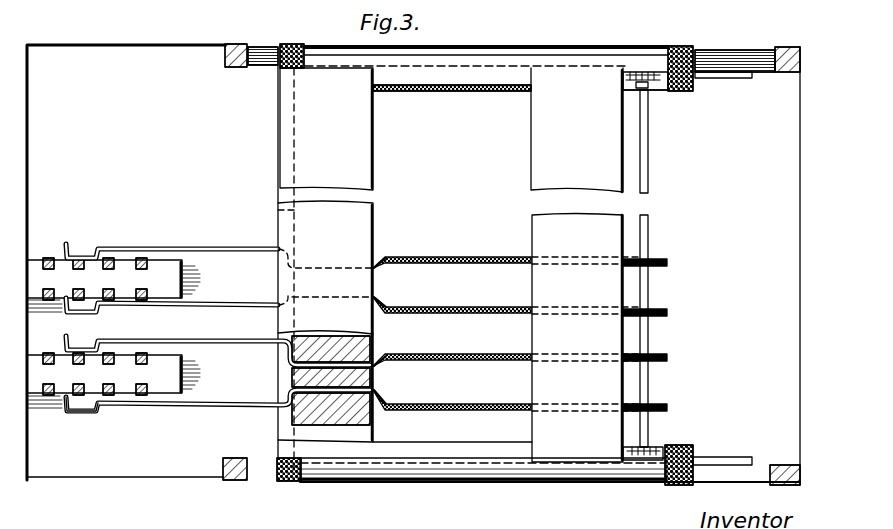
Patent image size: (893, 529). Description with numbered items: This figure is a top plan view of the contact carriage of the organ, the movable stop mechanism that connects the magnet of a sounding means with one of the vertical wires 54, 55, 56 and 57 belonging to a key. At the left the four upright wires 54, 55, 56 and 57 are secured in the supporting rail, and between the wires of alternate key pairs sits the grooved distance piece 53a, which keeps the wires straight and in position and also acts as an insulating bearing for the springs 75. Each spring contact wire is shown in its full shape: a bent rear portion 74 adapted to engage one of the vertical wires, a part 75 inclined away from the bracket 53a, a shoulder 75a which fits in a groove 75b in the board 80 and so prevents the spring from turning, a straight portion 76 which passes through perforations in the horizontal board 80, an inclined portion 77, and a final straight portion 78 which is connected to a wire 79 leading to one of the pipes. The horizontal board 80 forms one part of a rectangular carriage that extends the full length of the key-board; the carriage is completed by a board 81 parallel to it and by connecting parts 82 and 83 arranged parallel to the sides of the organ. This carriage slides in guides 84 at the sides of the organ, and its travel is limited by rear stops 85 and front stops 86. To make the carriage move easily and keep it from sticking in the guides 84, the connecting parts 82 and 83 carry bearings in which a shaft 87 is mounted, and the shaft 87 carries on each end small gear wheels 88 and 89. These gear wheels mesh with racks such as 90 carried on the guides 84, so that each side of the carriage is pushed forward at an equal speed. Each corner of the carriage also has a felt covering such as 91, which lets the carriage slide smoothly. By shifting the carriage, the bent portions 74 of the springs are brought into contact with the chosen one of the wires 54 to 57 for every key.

The grooved distance piece 53a is at (180, 380).
The wire 54 is at (49, 256).
The wire 55 is at (80, 256).
The wire 56 is at (112, 256).
The wire 57 is at (145, 256).
The bent rear portion 74 is at (77, 404).
The spring 75 is at (185, 410).
The shoulder 75a is at (292, 398).
The groove 75b is at (278, 211).
The straight portion 76 is at (372, 386).
The inclined portion 77 is at (385, 408).
The straight portion 78 is at (455, 408).
The wire 79 is at (527, 268).
The horizontal board 80 is at (372, 232).
The board 81 is at (577, 265).
The connecting part 82 is at (468, 90).
The connecting part 83 is at (440, 462).
The guide 84 is at (270, 64).
The rear stop 85 is at (225, 62).
The front stop 86 is at (785, 73).
The shaft 87 is at (650, 297).
The gear wheel 88 is at (661, 450).
The gear wheel 89 is at (661, 90).
The rack 90 is at (725, 78).
The felt covering 91 is at (668, 475).